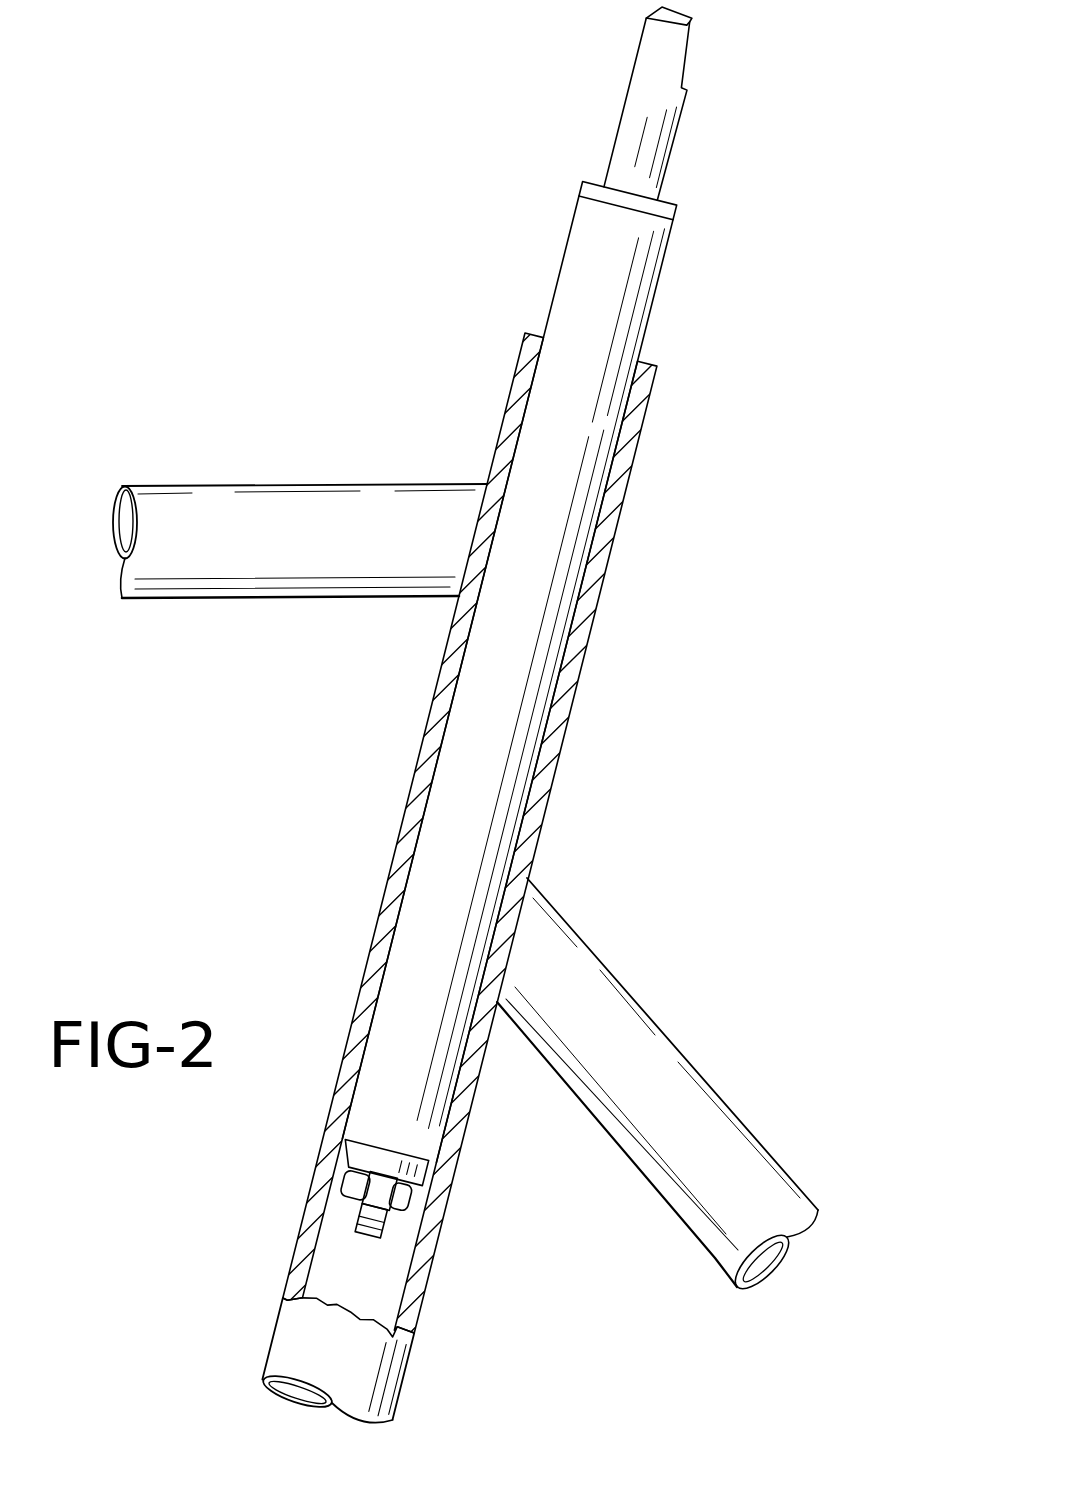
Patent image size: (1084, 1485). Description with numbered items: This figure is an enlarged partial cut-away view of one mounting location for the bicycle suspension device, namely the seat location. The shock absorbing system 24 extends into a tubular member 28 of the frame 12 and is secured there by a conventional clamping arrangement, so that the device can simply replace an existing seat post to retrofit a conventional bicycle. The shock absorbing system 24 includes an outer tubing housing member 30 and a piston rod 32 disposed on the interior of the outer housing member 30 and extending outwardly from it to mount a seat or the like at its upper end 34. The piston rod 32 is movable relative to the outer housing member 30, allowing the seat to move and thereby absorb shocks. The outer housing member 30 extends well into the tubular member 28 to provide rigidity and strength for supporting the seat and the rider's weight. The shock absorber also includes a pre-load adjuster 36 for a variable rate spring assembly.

The frame 12 is at (550, 747).
The shock absorbing system 24 is at (540, 255).
The tubular member 28 is at (505, 432).
The outer tubing housing member 30 is at (632, 290).
The piston rod 32 is at (640, 133).
The upper end 34 is at (677, 17).
The pre-load adjuster 36 is at (377, 1233).